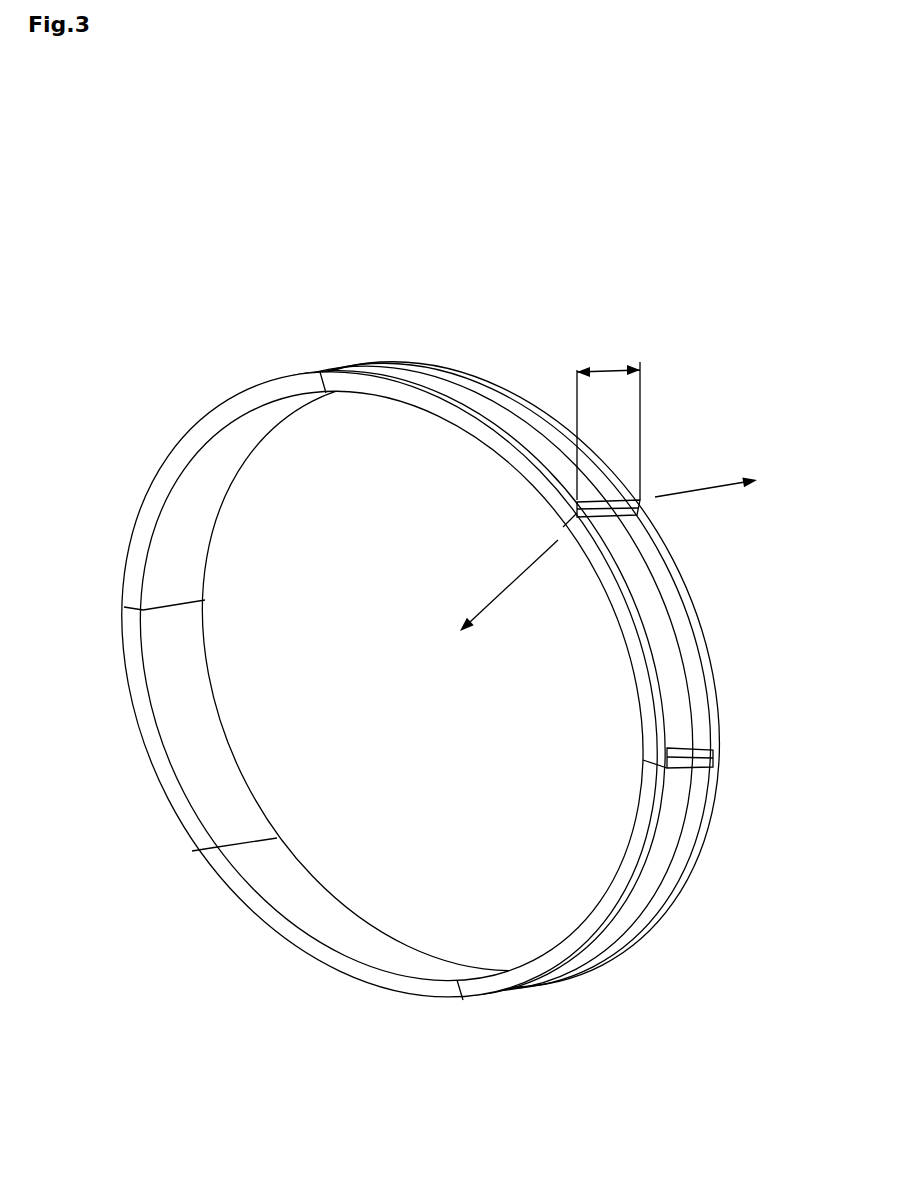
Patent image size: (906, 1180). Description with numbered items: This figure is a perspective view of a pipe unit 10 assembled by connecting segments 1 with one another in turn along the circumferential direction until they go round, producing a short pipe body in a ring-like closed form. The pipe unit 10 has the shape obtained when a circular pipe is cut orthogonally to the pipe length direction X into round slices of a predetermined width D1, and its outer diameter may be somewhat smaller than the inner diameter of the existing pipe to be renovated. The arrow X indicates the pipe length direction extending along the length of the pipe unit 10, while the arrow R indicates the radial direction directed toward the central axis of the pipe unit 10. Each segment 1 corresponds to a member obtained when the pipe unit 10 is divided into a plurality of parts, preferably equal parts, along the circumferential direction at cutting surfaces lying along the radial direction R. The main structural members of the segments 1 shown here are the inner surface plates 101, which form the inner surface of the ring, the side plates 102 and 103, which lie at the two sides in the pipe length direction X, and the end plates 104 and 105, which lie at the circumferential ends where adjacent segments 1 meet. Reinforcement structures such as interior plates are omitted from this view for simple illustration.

The segment 1 is at (142, 512).
The pipe unit 10 is at (268, 342).
The inner surface plate 101 is at (183, 543).
The side plate 102 is at (633, 707).
The side plate 103 is at (693, 587).
The end plate 104 is at (605, 520).
The end plate 105 is at (693, 748).
The predetermined width D1 is at (608, 416).
The pipe length direction X is at (723, 481).
The radial direction R is at (495, 605).